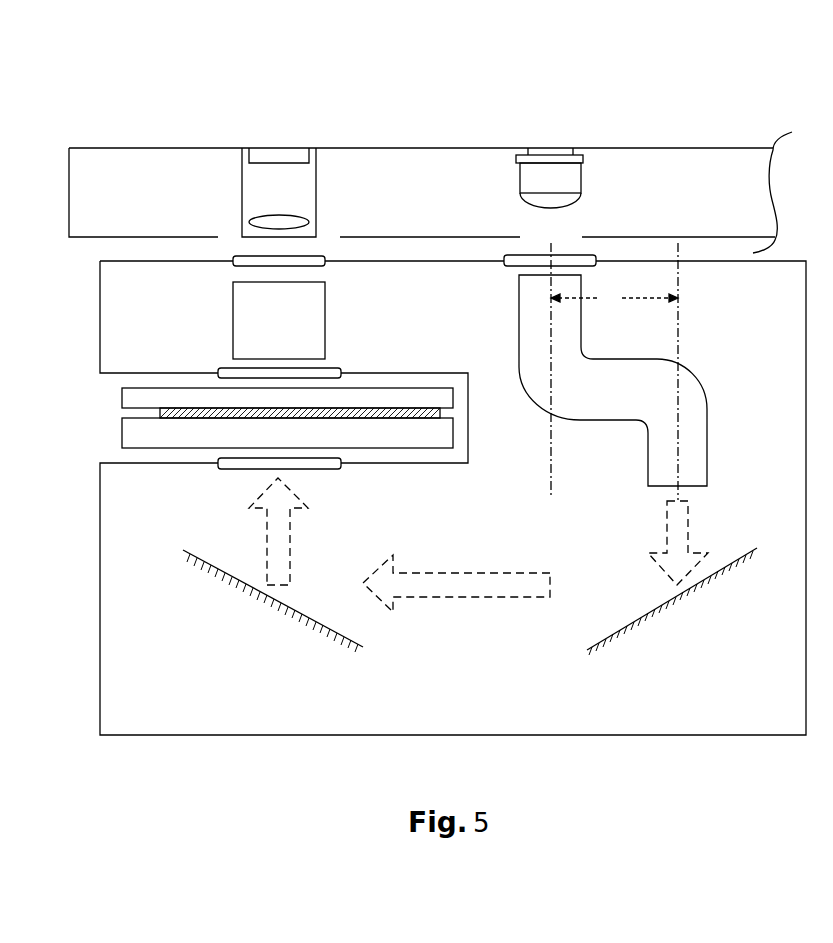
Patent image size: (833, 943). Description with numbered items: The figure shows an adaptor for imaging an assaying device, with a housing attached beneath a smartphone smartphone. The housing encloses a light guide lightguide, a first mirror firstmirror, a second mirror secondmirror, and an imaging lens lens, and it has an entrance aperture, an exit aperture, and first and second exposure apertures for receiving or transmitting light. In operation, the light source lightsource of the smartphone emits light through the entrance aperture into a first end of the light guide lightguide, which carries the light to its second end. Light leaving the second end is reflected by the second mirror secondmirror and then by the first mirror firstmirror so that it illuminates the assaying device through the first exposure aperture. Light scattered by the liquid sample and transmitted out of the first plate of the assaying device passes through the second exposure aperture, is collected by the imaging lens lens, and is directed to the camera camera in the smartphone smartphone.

The element camera is at (232, 172).
The element smartphone is at (383, 148).
The light source lightsource is at (582, 178).
The imaging lens is at (279, 320).
The light guide lightguide is at (686, 371).
The first mirror firstmirror is at (287, 606).
The second mirror secondmirror is at (667, 601).